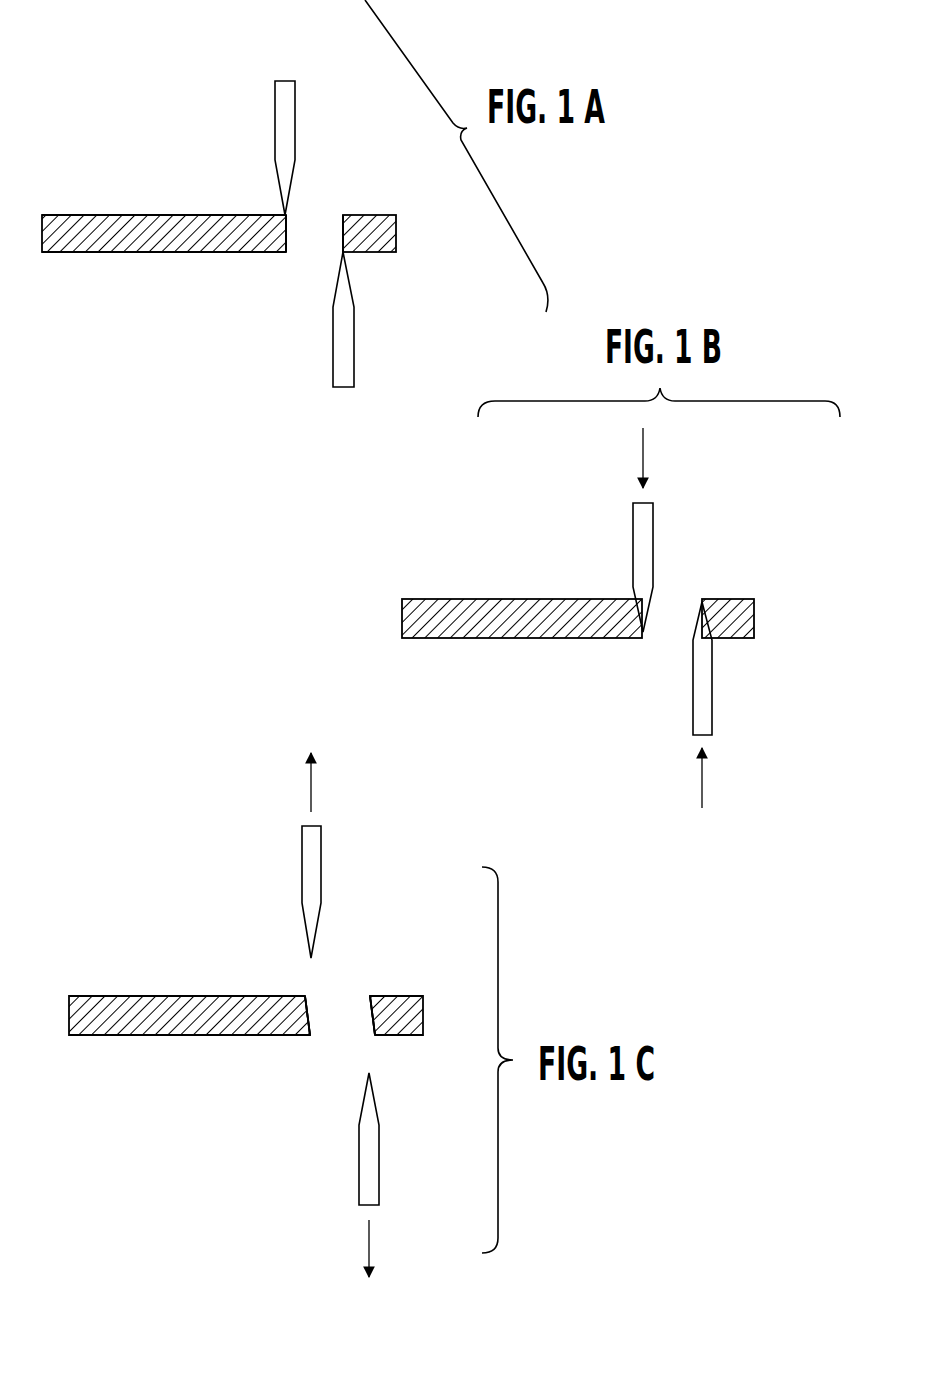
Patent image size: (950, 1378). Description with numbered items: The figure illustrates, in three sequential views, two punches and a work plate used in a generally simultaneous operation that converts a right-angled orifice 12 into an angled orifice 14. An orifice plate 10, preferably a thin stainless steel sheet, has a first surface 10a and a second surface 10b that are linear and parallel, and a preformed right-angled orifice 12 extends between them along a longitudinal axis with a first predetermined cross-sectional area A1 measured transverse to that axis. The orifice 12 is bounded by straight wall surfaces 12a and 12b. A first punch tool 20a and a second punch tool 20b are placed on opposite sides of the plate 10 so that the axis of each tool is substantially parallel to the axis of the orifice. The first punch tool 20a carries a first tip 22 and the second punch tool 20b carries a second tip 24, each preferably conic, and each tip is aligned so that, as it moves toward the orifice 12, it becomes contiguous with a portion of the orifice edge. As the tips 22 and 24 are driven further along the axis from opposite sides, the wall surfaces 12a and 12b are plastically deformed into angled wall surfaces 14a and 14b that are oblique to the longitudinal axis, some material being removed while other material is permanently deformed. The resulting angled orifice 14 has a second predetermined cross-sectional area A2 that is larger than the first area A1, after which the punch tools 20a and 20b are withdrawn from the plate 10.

In FIG. 1A, the orifice plate 10 is at (155, 245).
In FIG. 1B, the orifice plate 10 is at (512, 625).
In FIG. 1C, the orifice plate 10 is at (182, 1027).
In FIG. 1A, the first surface 10a is at (130, 215).
In FIG. 1A, the second surface 10b is at (97, 255).
In FIG. 1A, the right-angled orifice 12 is at (336, 225).
In FIG. 1A, the straight wall surface 12a is at (288, 228).
In FIG. 1A, the straight wall surface 12b is at (337, 253).
In FIG. 1C, the angled orifice 14 is at (355, 1003).
In FIG. 1C, the angled wall surface 14a is at (310, 1008).
In FIG. 1C, the angled wall surface 14b is at (372, 1027).
In FIG. 1A, the first punch tool 20a is at (275, 125).
In FIG. 1B, the first punch tool 20a is at (633, 545).
In FIG. 1A, the second punch tool 20b is at (354, 346).
In FIG. 1B, the second punch tool 20b is at (712, 693).
In FIG. 1C, the first tip 22 is at (302, 865).
In FIG. 1C, the second tip 24 is at (379, 1165).
In FIG. 1A, the first predetermined cross-sectional area A1 is at (316, 251).
In FIG. 1C, the second predetermined cross-sectional area A2 is at (332, 1041).